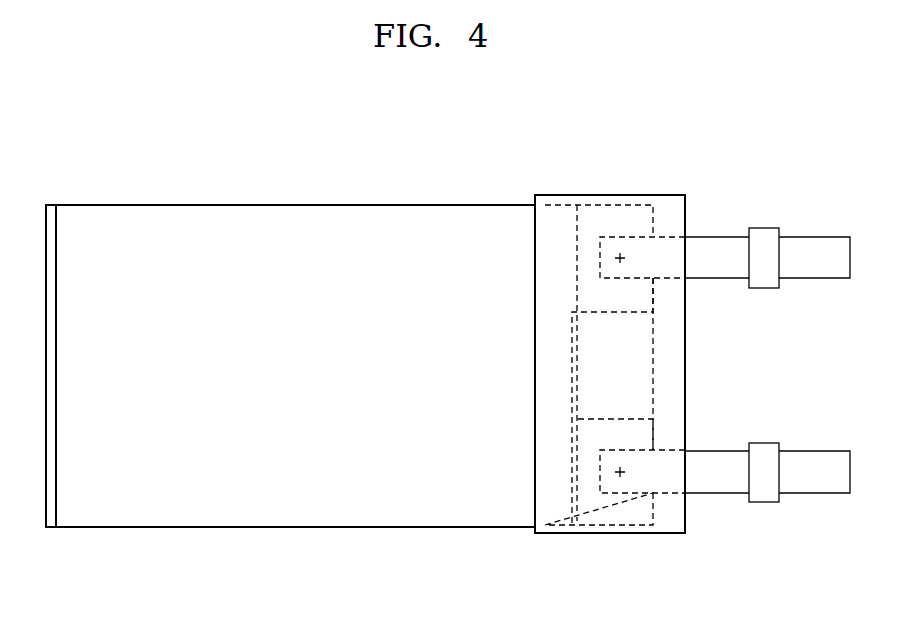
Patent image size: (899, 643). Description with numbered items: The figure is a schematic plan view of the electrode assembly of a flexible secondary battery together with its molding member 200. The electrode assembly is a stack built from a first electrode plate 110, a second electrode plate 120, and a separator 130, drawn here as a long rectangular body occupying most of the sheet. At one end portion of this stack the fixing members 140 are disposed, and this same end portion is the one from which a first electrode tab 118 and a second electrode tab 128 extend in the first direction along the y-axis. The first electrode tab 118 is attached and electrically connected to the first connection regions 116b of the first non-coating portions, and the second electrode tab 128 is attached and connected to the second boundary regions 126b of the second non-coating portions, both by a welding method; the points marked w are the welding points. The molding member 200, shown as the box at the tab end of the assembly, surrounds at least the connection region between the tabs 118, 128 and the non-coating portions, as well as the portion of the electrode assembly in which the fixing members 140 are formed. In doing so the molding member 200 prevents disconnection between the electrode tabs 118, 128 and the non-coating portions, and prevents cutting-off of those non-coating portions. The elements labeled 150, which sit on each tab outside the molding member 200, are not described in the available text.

The first electrode plate 110 is at (213, 200).
The second electrode plate 120 is at (357, 534).
The separator 130 is at (50, 534).
The fixing members 140 is at (561, 215).
The molding member 200 is at (545, 535).
The first connection regions 116b is at (645, 215).
The second boundary regions 126b is at (640, 515).
The first electrode tab 118 is at (822, 240).
The second electrode tab 128 is at (822, 489).
The insulating member 150 is at (765, 236).
The welding points w is at (620, 255).